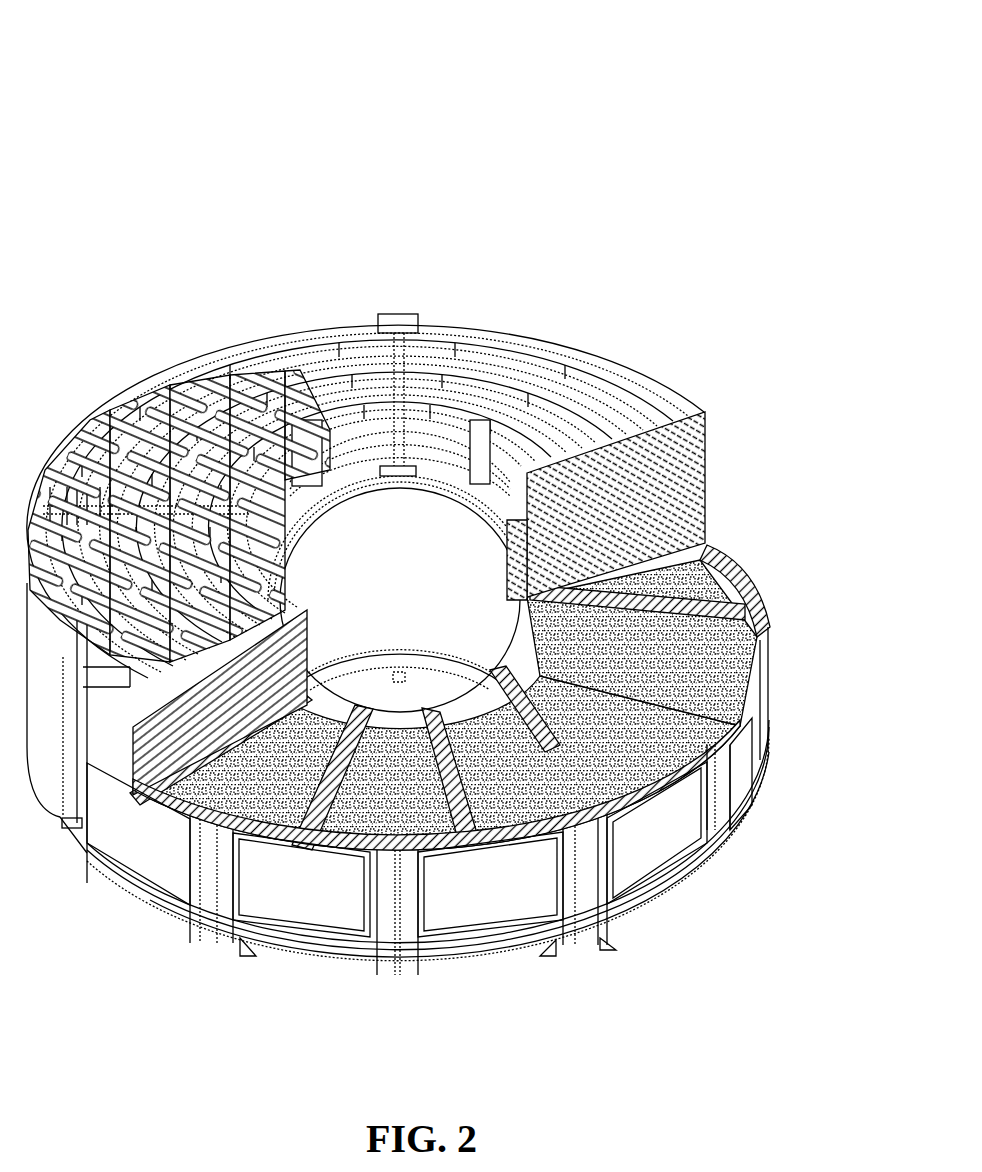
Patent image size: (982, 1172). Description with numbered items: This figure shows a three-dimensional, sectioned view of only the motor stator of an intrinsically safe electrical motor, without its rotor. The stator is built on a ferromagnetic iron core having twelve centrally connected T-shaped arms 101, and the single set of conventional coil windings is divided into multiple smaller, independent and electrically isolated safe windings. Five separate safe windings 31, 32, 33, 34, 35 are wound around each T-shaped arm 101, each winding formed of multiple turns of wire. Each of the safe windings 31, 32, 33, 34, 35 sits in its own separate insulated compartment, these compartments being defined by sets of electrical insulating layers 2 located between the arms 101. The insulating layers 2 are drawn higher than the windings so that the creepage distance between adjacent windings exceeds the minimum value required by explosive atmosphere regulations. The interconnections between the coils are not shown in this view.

The insulating layers 2 is at (403, 321).
The first safe wire winding 31 is at (78, 430).
The second safe wire winding 32 is at (120, 415).
The third safe wire winding 33 is at (160, 410).
The fourth safe wire winding 34 is at (195, 405).
The fifth safe wire winding 35 is at (250, 395).
The T-shaped arm 101 is at (645, 785).